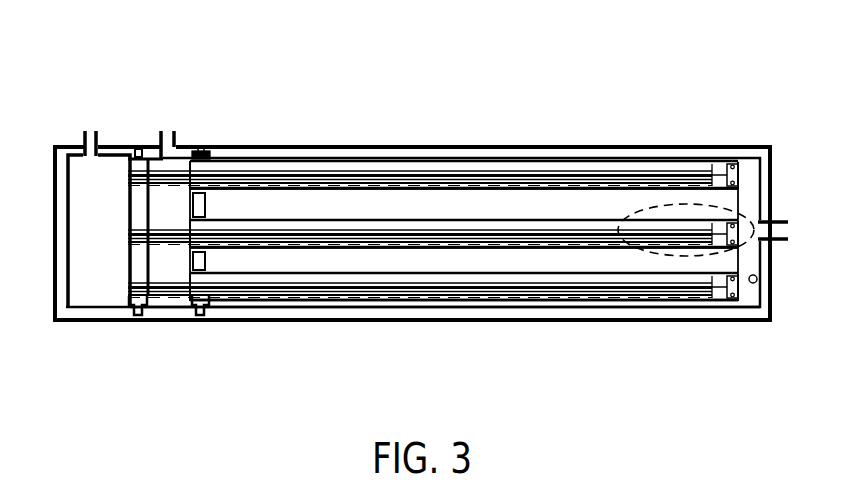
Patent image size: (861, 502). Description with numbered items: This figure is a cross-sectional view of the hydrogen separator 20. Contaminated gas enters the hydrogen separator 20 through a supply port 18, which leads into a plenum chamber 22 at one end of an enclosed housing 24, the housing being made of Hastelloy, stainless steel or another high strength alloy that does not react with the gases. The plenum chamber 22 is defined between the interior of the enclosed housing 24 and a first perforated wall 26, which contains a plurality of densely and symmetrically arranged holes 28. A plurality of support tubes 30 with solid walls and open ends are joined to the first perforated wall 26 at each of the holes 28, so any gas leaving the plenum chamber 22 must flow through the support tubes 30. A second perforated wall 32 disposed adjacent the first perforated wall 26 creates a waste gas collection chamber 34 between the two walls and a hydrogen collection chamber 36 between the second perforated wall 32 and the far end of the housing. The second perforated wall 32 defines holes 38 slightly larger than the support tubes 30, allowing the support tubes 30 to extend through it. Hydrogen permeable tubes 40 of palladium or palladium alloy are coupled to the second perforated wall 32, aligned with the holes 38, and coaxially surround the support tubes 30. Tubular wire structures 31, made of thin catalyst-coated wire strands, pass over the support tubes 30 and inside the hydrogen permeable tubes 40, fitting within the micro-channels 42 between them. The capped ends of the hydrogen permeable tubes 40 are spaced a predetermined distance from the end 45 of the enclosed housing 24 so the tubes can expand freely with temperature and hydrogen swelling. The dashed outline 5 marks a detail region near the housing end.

The hydrogen separator 20 is at (487, 68).
The enclosed housing 24 is at (320, 148).
The detail region / outlet port 5 is at (748, 207).
The plenum chamber 22 is at (82, 250).
The supply port 18 is at (93, 131).
The waste gas collection chamber 34 is at (172, 204).
The holes 28 is at (142, 315).
The first perforated wall 26 is at (132, 315).
The second perforated wall 32 is at (208, 318).
The support tubes 30 is at (178, 300).
The holes 38 is at (200, 153).
The tubular wire structures 31 is at (572, 226).
The hydrogen collection chamber 36 is at (438, 255).
The hydrogen permeable tubes 40 is at (539, 303).
The micro-channels 42 is at (665, 303).
The end 45 is at (757, 276).